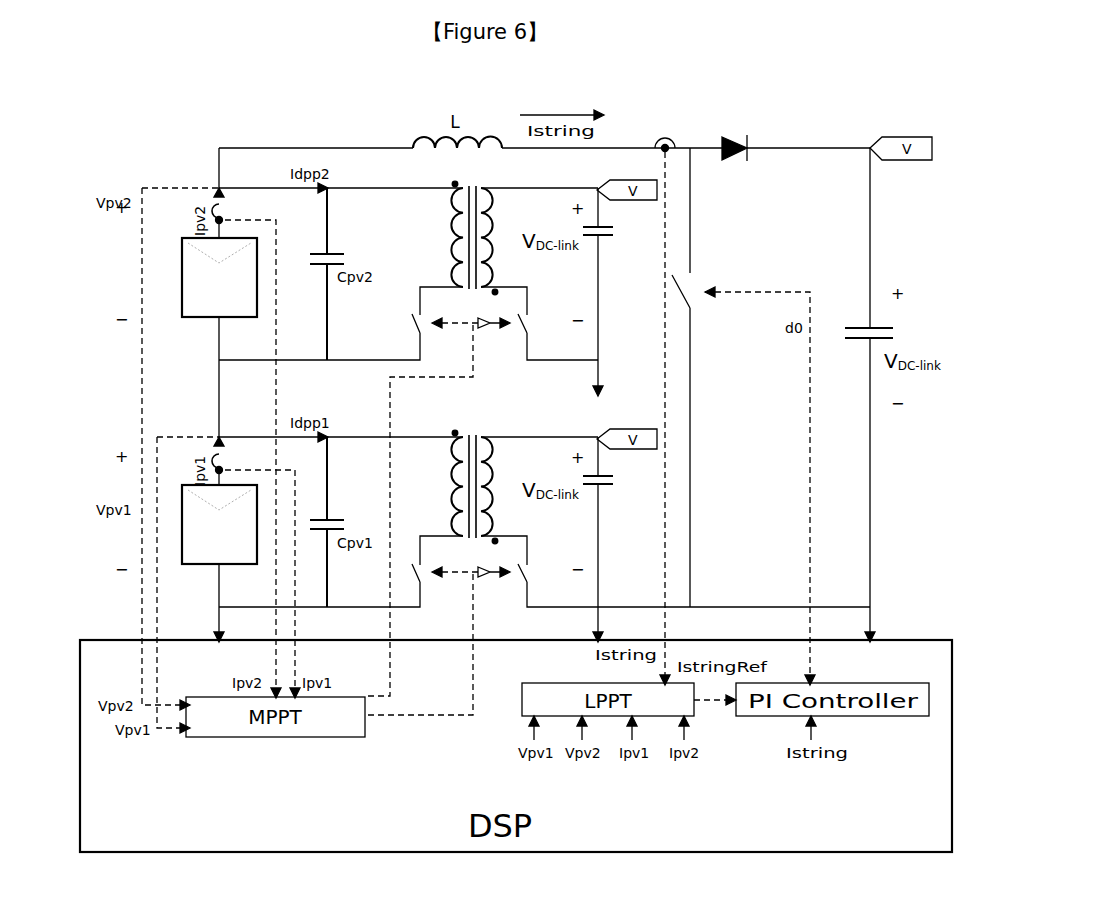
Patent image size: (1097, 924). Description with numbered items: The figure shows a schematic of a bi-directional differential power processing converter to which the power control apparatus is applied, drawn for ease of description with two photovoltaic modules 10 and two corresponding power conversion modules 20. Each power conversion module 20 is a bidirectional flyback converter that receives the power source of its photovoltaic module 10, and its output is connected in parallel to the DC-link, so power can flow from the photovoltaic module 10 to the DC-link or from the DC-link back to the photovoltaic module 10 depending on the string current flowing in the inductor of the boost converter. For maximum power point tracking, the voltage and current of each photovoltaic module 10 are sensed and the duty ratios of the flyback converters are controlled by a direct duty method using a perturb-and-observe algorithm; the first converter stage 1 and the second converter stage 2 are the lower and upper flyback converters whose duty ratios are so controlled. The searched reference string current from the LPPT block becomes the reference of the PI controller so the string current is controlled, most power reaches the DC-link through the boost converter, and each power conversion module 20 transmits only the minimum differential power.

The photovoltaic module 10 is at (182, 296).
The power conversion module 20 is at (440, 232).
The lower DPP converter switch d1 1 is at (408, 572).
The upper DPP converter switch d2 2 is at (408, 491).